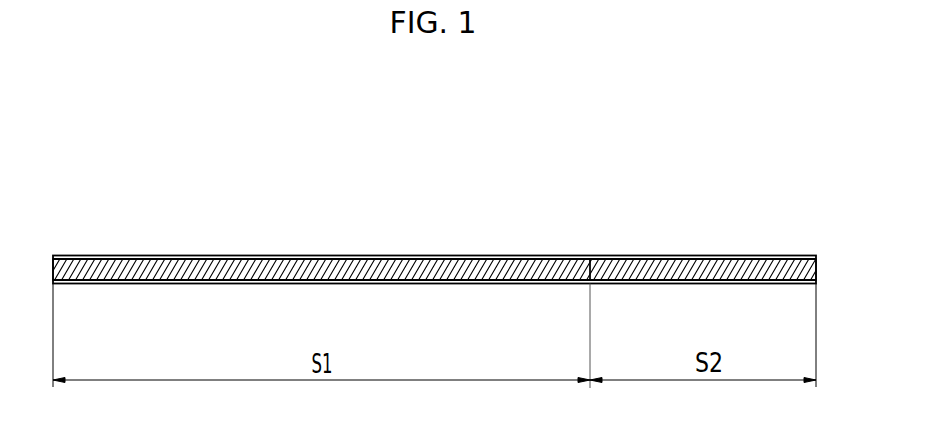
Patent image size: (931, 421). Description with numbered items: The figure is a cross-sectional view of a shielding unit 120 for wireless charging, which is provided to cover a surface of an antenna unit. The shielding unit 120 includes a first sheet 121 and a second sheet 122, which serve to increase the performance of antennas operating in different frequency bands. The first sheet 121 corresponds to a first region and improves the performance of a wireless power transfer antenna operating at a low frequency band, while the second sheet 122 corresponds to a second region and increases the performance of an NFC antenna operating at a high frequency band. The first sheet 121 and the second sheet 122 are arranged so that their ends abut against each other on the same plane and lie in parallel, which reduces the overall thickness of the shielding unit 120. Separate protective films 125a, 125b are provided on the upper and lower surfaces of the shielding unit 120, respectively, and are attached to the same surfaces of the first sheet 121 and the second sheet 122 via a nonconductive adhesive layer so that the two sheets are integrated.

The shielding unit 120 is at (405, 153).
The first sheet 121 is at (405, 261).
The second sheet 122 is at (742, 260).
The protective film 125a is at (508, 257).
The protective film 125b is at (512, 288).